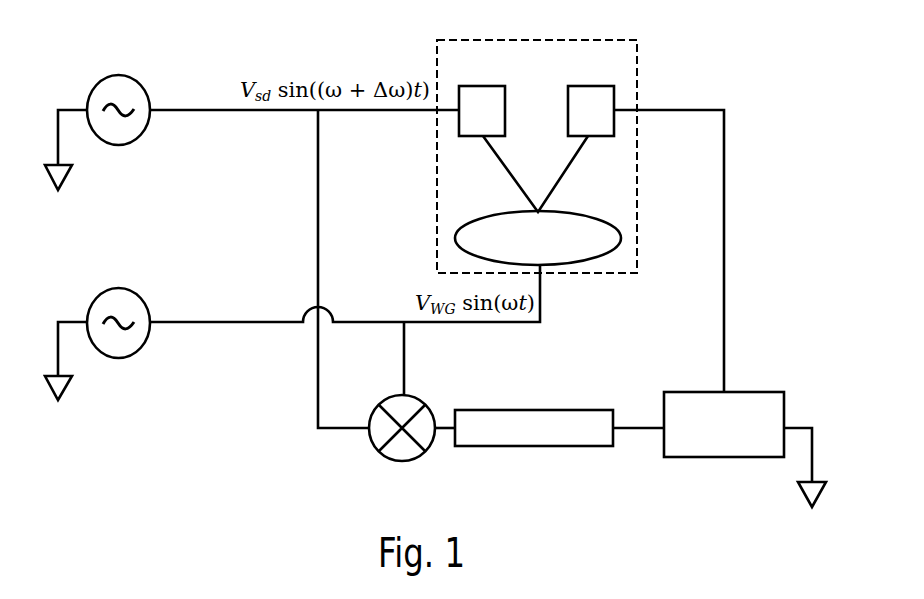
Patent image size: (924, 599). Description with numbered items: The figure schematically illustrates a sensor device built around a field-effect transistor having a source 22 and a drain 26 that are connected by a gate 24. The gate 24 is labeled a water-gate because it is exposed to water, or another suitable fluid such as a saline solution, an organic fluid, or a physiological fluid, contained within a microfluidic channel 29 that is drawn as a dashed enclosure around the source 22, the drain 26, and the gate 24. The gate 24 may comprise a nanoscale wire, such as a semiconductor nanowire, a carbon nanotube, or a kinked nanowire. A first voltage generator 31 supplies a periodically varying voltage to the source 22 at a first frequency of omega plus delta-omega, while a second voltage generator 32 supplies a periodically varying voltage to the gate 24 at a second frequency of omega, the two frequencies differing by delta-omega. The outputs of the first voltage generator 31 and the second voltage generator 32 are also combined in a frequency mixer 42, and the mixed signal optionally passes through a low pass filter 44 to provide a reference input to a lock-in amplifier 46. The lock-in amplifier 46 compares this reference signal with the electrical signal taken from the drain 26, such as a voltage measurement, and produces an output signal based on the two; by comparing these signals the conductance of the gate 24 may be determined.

The source 22 is at (505, 107).
The gate 24 is at (585, 213).
The drain 26 is at (568, 113).
The microfluidic channel 29 is at (637, 78).
The first voltage generator 31 is at (141, 83).
The second voltage generator 32 is at (141, 297).
The frequency mixer 42 is at (424, 399).
The low pass filter 44 is at (536, 410).
The lock-in amplifier 46 is at (687, 392).